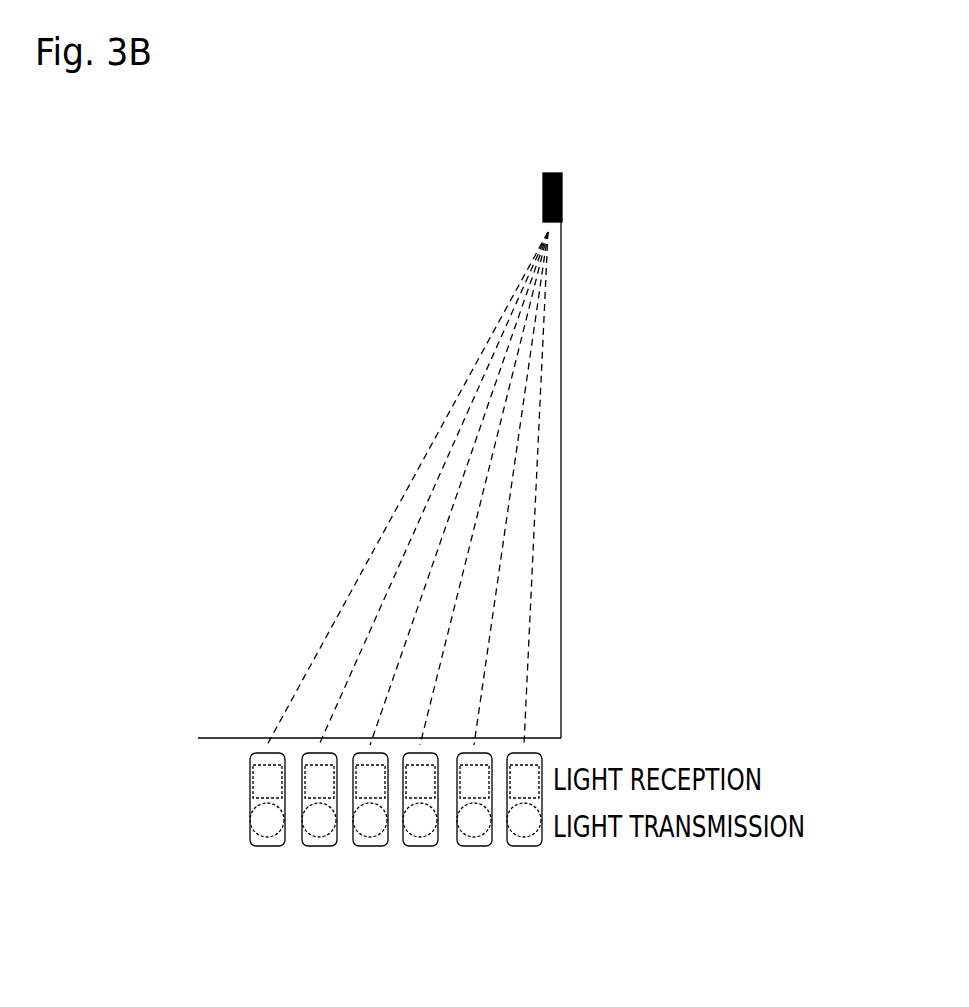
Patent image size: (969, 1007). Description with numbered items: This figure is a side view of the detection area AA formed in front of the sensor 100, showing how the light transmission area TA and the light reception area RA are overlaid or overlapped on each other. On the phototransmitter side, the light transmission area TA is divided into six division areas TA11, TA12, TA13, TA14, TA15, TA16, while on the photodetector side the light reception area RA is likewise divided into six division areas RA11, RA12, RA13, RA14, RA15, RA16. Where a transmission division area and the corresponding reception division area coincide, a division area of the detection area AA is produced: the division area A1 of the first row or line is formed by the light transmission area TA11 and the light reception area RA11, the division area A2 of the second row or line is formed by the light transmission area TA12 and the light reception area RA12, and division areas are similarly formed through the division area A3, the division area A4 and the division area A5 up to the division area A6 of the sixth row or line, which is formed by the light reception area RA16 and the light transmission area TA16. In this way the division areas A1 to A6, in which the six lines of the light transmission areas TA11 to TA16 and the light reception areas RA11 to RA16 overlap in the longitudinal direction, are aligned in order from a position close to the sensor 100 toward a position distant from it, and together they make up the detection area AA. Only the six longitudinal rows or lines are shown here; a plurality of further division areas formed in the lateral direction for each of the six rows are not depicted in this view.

The sensor 100 is at (543, 200).
The detection area AA is at (152, 803).
The light reception area RA is at (233, 785).
The light transmission area TA is at (237, 827).
The division area A1 is at (591, 796).
The division area A2 is at (566, 799).
The division area A3 is at (539, 800).
The division area A4 is at (258, 779).
The division area A5 is at (230, 779).
The division area A6 is at (206, 783).
The division area RA11 is at (528, 765).
The division area RA12 is at (478, 765).
The division area RA13 is at (420, 765).
The division area RA14 is at (367, 765).
The division area RA15 is at (318, 765).
The division area RA16 is at (263, 765).
The division area TA11 is at (536, 833).
The division area TA12 is at (488, 835).
The division area TA13 is at (436, 833).
The division area TA14 is at (358, 832).
The division area TA15 is at (306, 830).
The division area TA16 is at (253, 834).